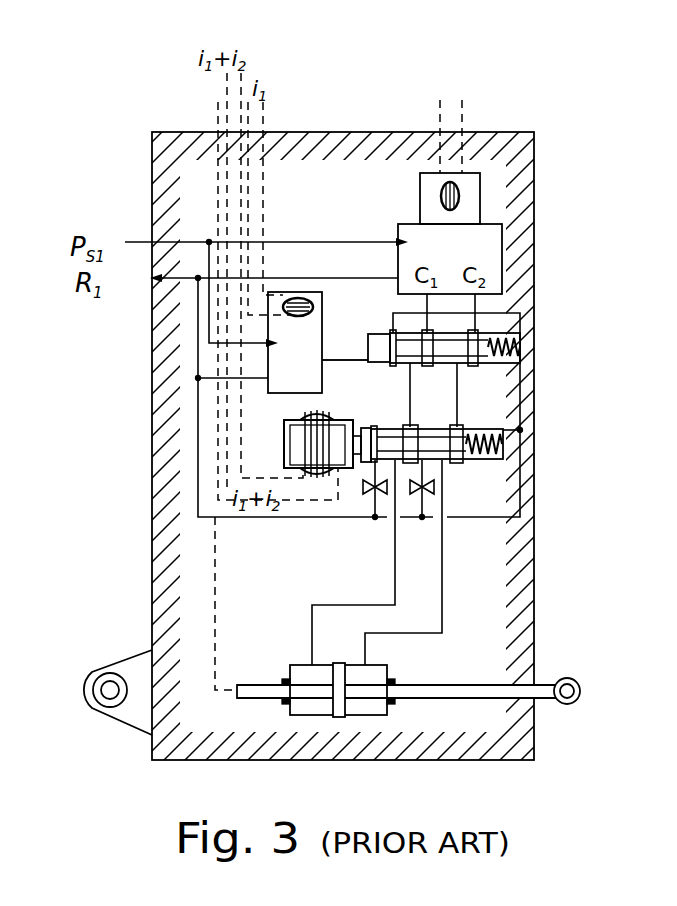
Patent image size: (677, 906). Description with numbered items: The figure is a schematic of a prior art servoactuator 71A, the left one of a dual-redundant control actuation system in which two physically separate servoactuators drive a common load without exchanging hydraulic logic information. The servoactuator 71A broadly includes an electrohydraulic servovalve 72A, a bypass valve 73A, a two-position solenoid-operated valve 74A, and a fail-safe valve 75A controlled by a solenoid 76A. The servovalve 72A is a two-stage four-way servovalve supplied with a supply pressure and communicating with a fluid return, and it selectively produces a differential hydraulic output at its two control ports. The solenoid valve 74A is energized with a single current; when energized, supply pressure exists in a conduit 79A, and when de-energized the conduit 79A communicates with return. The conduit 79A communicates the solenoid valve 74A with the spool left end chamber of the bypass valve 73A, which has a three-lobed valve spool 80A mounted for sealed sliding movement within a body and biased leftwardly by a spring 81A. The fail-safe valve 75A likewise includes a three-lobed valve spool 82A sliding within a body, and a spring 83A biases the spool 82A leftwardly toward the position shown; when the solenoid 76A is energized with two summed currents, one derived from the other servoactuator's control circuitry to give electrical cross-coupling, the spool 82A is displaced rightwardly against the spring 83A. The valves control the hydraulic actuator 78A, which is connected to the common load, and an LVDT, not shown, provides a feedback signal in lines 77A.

The servoactuator 71A is at (157, 88).
The electrohydraulic servovalve 72A is at (489, 201).
The bypass valve 73A is at (504, 326).
The two-position solenoid-operated valve 74A is at (295, 342).
The fail-safe valve 75A is at (471, 471).
The solenoid 76A is at (299, 439).
The lines 77A is at (216, 556).
The actuator 78A is at (422, 663).
The conduit 79A is at (352, 357).
The three-lobed valve spool 80A is at (483, 365).
The spring 81A is at (521, 344).
The three-lobed valve spool 82A is at (467, 451).
The spring 83A is at (520, 430).